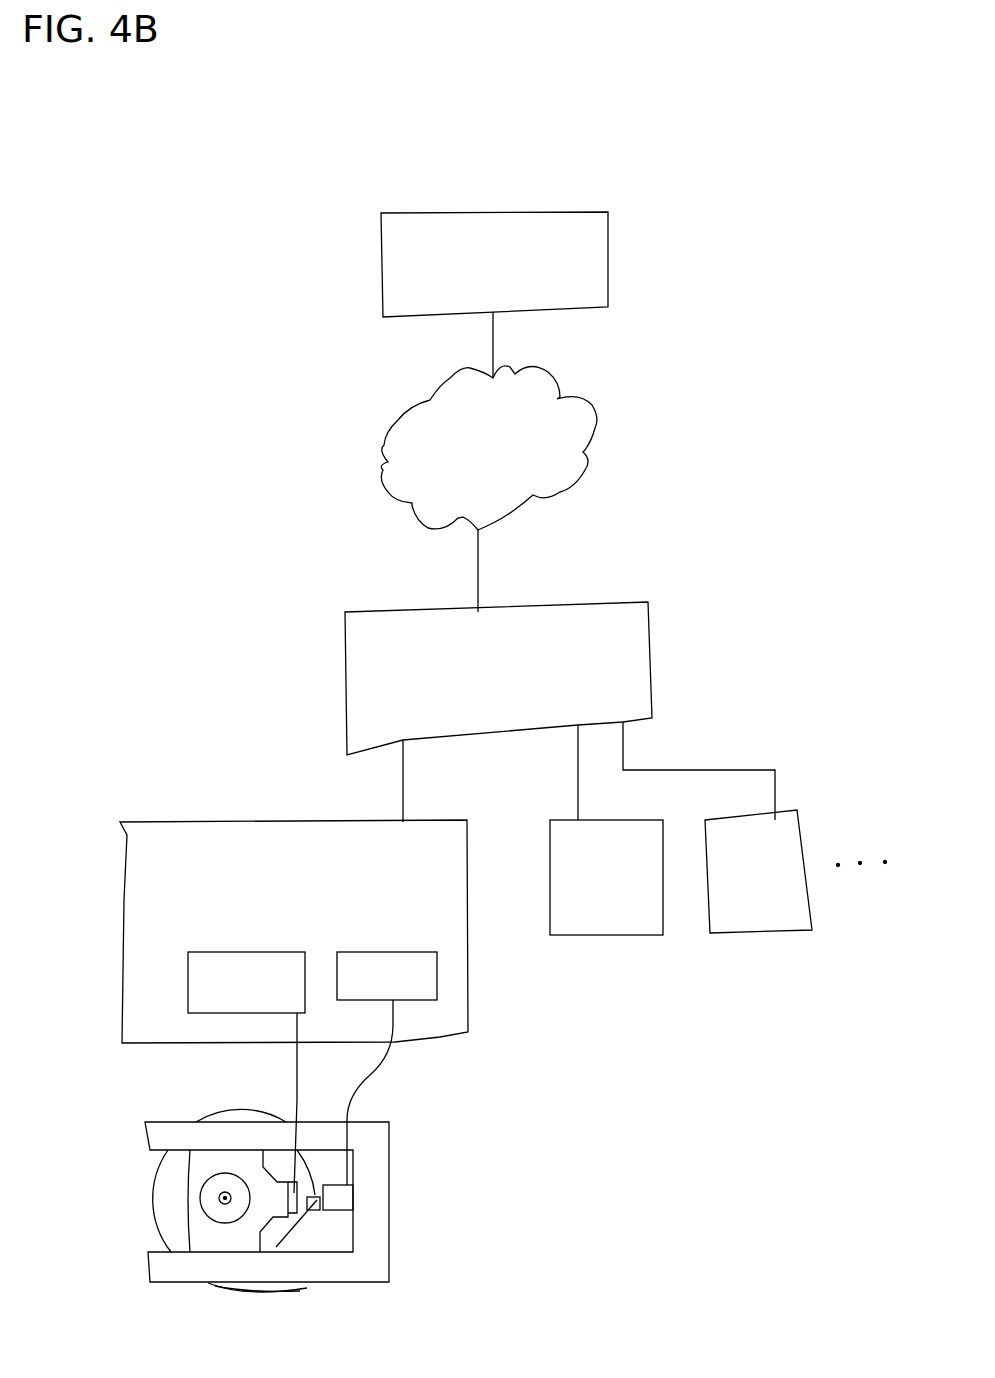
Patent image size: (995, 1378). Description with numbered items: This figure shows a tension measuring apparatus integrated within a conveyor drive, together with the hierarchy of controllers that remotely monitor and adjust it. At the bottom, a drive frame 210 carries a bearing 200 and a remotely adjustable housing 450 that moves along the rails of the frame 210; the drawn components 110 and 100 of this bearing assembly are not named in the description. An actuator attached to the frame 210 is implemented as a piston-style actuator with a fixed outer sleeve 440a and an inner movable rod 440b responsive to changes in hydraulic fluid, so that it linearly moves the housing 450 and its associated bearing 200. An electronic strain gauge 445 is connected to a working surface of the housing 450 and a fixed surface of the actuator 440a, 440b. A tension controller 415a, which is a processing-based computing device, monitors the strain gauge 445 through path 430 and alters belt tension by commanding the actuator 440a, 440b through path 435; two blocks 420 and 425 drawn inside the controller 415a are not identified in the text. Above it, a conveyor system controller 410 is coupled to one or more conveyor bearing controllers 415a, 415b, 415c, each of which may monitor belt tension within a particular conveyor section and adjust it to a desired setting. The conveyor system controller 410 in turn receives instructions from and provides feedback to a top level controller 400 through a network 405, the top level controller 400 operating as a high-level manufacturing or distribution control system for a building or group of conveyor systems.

The top level controller 400 is at (617, 248).
The network 405 is at (597, 427).
The conveyor system controller 410 is at (662, 645).
The conveyor bearing controller 415a is at (430, 1045).
The conveyor bearing controller 415b is at (598, 945).
The conveyor bearing controller 415c is at (758, 940).
The processor 420 is at (253, 932).
The power module 425 is at (388, 932).
The path 430 is at (290, 1062).
The path 435 is at (380, 1060).
The frame 210 is at (378, 1150).
The bearing 200 is at (233, 1197).
The lens 110 is at (160, 1207).
The housing 100 is at (272, 1288).
The fixed outer sleeve 440a is at (341, 1198).
The inner movable rod 440b is at (318, 1212).
The electronic strain gauge 445 is at (308, 1215).
The remotely adjustable housing 450 is at (221, 1235).